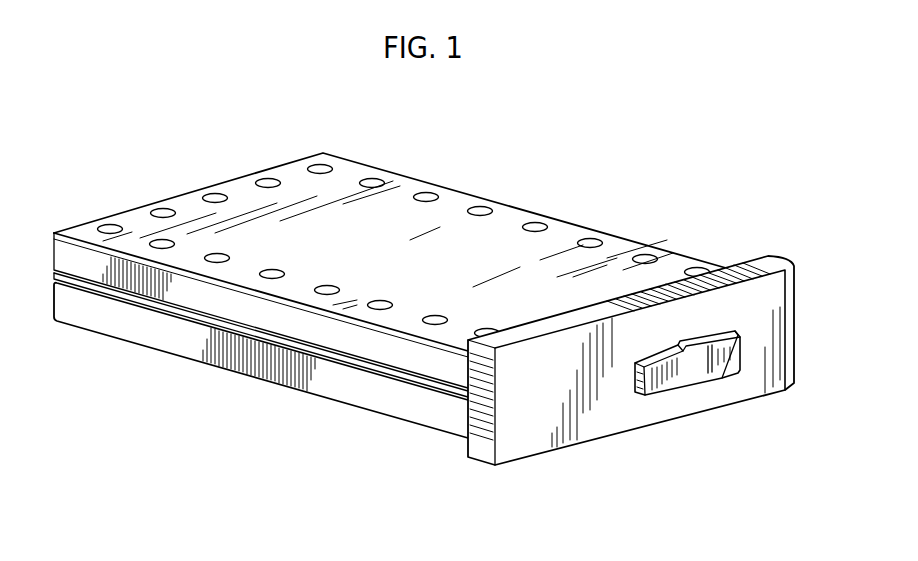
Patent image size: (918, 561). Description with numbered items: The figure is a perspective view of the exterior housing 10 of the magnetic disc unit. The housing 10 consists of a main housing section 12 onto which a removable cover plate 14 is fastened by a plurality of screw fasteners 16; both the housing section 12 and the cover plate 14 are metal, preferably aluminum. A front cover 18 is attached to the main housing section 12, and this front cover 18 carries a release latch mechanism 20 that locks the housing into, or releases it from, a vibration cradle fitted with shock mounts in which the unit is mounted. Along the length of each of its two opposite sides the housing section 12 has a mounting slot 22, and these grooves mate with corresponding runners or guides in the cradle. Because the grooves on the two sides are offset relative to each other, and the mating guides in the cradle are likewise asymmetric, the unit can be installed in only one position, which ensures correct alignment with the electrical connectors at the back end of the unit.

The housing 10 is at (553, 184).
The main housing section 12 is at (258, 363).
The removable cover plate 14 is at (633, 242).
The screw fasteners 16 is at (333, 163).
The front cover 18 is at (788, 312).
The release latch mechanism 20 is at (691, 373).
The mounting slot 22 is at (350, 363).